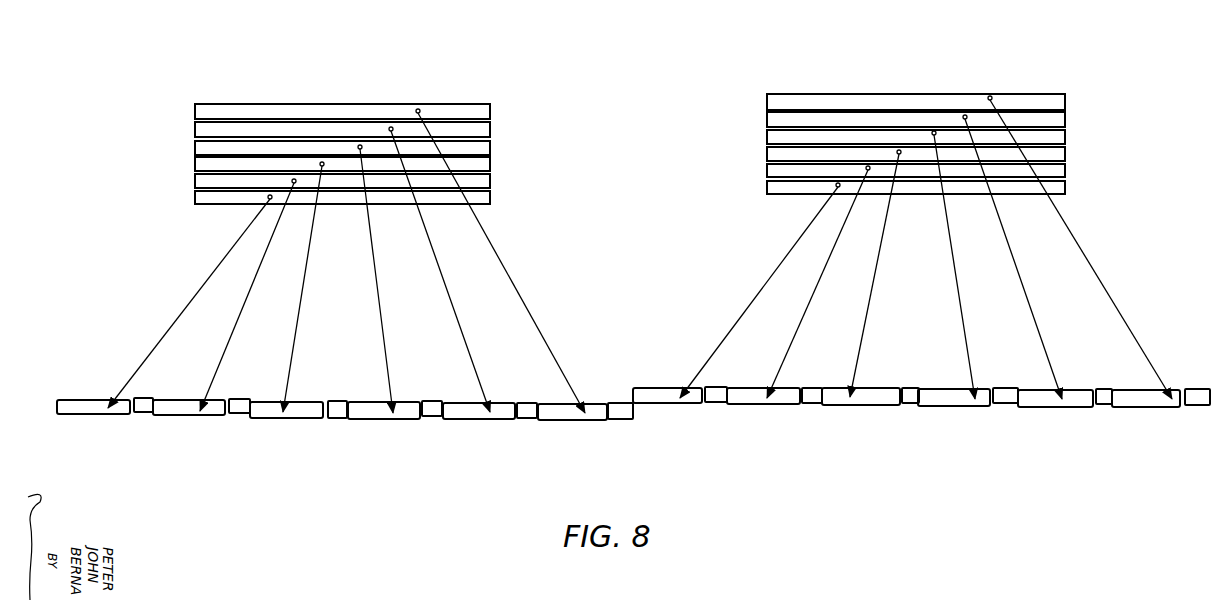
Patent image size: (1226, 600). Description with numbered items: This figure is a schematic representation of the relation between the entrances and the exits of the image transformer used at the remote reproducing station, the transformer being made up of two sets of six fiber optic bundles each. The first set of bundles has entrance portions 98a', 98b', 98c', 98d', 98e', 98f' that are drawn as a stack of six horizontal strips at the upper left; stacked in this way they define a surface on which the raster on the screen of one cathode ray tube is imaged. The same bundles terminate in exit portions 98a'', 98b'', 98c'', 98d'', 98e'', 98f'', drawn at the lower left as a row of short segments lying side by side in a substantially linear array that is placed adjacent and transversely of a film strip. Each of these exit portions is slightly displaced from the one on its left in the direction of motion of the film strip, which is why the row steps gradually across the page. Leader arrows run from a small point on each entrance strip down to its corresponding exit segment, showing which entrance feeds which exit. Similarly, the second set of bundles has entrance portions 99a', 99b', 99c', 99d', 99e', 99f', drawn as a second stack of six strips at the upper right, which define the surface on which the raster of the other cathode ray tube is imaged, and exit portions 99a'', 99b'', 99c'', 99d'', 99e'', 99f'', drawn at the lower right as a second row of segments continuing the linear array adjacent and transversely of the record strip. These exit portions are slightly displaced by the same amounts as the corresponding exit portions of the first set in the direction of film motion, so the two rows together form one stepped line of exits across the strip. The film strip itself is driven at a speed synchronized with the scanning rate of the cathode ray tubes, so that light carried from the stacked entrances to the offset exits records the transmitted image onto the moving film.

The entrance portion 98a' is at (320, 203).
The entrance portion 98b' is at (372, 175).
The entrance portion 98c' is at (316, 165).
The entrance portion 98d' is at (372, 142).
The entrance portion 98e' is at (316, 131).
The entrance portion 98f' is at (342, 96).
The exit portion 98a'' is at (91, 390).
The exit portion 98b'' is at (189, 390).
The exit portion 98c'' is at (298, 393).
The exit portion 98d'' is at (399, 392).
The exit portion 98e'' is at (491, 392).
The exit portion 98f'' is at (576, 382).
The entrance portion 99a' is at (891, 202).
The entrance portion 99b' is at (944, 168).
The entrance portion 99c' is at (889, 156).
The entrance portion 99d' is at (944, 134).
The entrance portion 99e' is at (889, 123).
The entrance portion 99f' is at (916, 88).
The exit portion 99a'' is at (668, 417).
The exit portion 99b'' is at (763, 417).
The exit portion 99c'' is at (861, 417).
The exit portion 99d'' is at (956, 418).
The exit portion 99e'' is at (1055, 418).
The exit portion 99f'' is at (1146, 418).